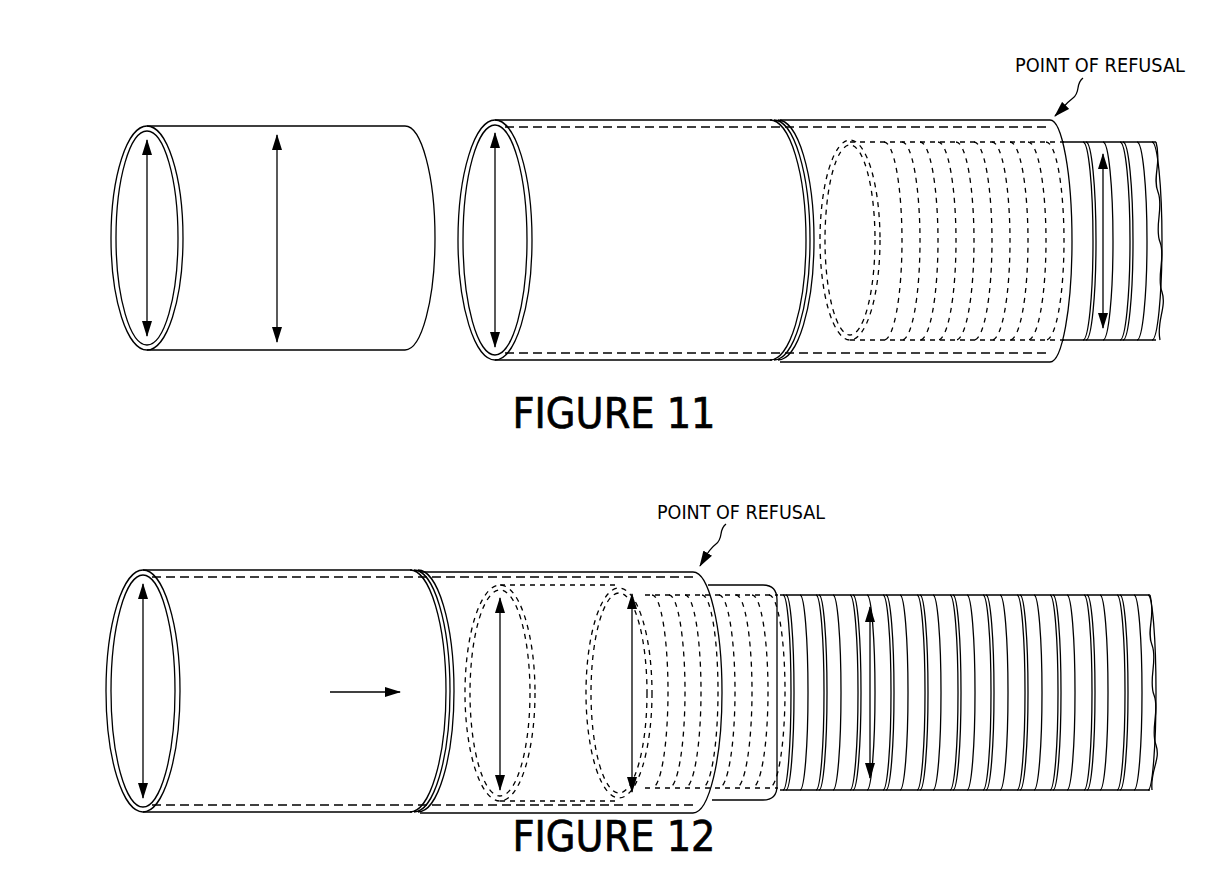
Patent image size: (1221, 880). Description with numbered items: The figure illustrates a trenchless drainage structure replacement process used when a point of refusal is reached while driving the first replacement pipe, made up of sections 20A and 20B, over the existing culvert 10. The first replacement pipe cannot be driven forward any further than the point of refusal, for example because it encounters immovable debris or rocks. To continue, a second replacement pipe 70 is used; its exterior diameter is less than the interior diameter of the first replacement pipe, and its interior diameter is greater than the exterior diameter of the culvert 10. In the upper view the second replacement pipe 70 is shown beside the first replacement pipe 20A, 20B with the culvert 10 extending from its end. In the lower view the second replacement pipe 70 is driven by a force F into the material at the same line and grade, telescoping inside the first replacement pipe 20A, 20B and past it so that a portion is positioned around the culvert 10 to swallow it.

In FIG. 11, the culvert 10 is at (1134, 142).
In FIG. 12, the culvert 10 is at (900, 594).
In FIG. 11, the first section of the first replacement pipe 20A is at (883, 125).
In FIG. 12, the first section of the first replacement pipe 20A is at (533, 572).
In FIG. 11, the second section of the first replacement pipe 20B is at (630, 123).
In FIG. 12, the second section of the first replacement pipe 20B is at (272, 571).
In FIG. 11, the second replacement pipe 70 is at (262, 128).
In FIG. 12, the second replacement pipe 70 is at (612, 586).